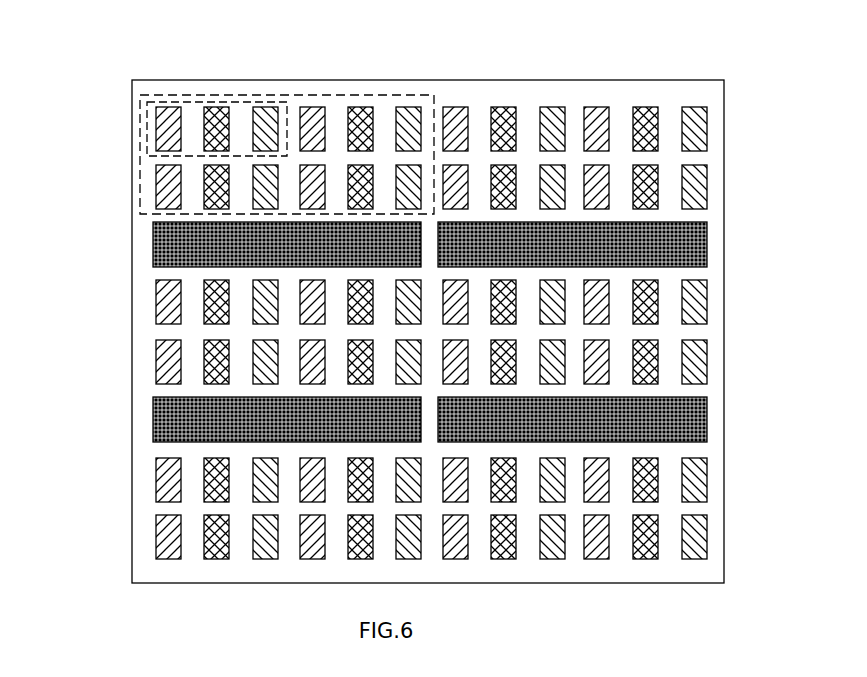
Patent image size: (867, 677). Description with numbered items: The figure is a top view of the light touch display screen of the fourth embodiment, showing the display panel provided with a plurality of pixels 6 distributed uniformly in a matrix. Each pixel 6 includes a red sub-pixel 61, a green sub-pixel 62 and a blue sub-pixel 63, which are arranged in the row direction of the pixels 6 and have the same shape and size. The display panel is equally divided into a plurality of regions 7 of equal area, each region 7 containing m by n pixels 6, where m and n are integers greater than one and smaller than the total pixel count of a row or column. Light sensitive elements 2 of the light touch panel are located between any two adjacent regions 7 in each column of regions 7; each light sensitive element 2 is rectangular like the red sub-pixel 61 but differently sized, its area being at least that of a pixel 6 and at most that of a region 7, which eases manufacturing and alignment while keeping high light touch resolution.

The light sensitive element 2 is at (158, 240).
The pixel 6 is at (228, 102).
The region 7 is at (425, 94).
The red sub-pixel 61 is at (163, 127).
The green sub-pixel 62 is at (213, 125).
The blue sub-pixel 63 is at (277, 120).